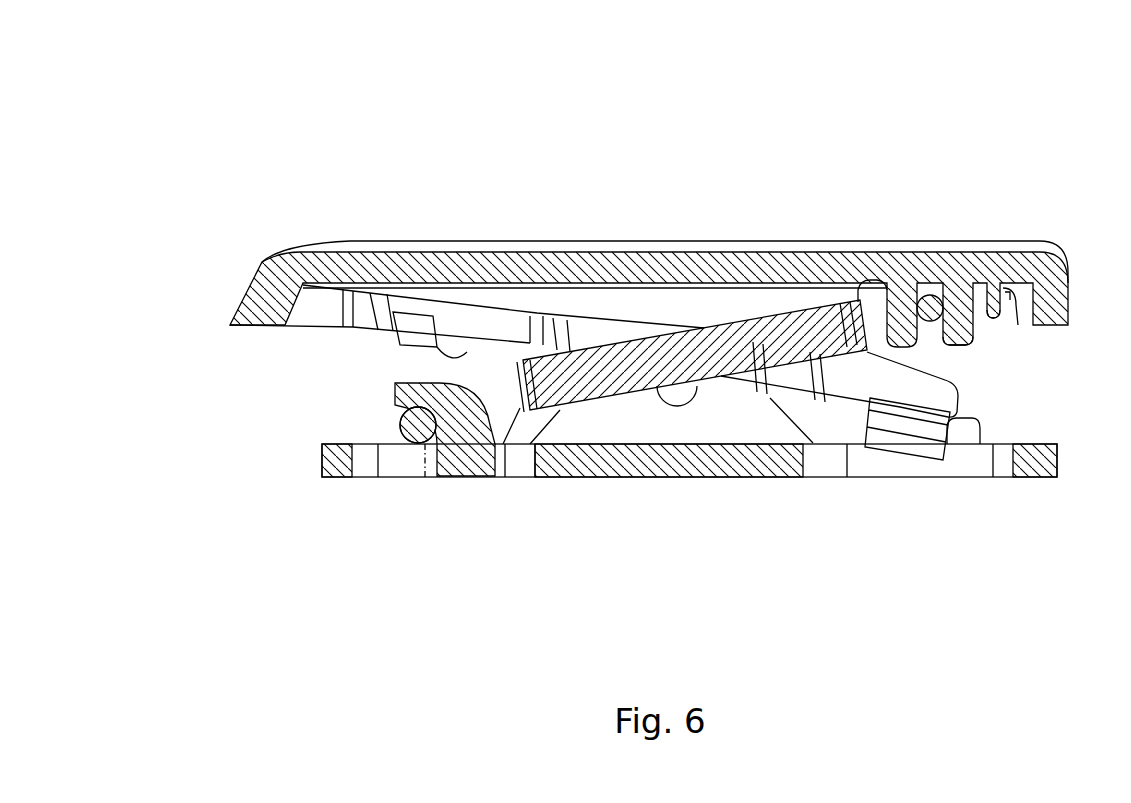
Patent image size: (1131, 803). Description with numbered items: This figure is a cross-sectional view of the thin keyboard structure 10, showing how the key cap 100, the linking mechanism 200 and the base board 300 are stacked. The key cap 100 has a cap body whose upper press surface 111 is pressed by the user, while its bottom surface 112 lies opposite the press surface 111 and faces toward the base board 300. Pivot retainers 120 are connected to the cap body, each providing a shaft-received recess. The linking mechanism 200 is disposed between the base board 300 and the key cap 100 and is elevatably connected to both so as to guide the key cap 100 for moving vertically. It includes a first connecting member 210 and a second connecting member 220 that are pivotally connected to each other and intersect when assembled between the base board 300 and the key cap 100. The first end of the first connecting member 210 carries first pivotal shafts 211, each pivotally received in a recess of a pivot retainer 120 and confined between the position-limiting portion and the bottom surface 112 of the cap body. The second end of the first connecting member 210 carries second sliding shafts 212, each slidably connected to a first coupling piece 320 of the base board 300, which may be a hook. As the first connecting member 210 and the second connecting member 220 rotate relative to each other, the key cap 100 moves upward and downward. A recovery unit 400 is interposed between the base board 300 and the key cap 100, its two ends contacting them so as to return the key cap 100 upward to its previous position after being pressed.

The thin keyboard structure 10 is at (1110, 37).
The key cap 100 is at (290, 273).
The press surface 111 is at (988, 243).
The bottom surface 112 is at (1008, 316).
The pivot retainer 120 is at (982, 342).
The linking mechanism 200 is at (777, 187).
The first connecting member 210 is at (752, 338).
The first pivotal shaft 211 is at (918, 298).
The second sliding shaft 212 is at (432, 432).
The second connecting member 220 is at (590, 338).
The base board 300 is at (322, 453).
The first coupling piece 320 is at (397, 387).
The recovery unit 400 is at (653, 447).